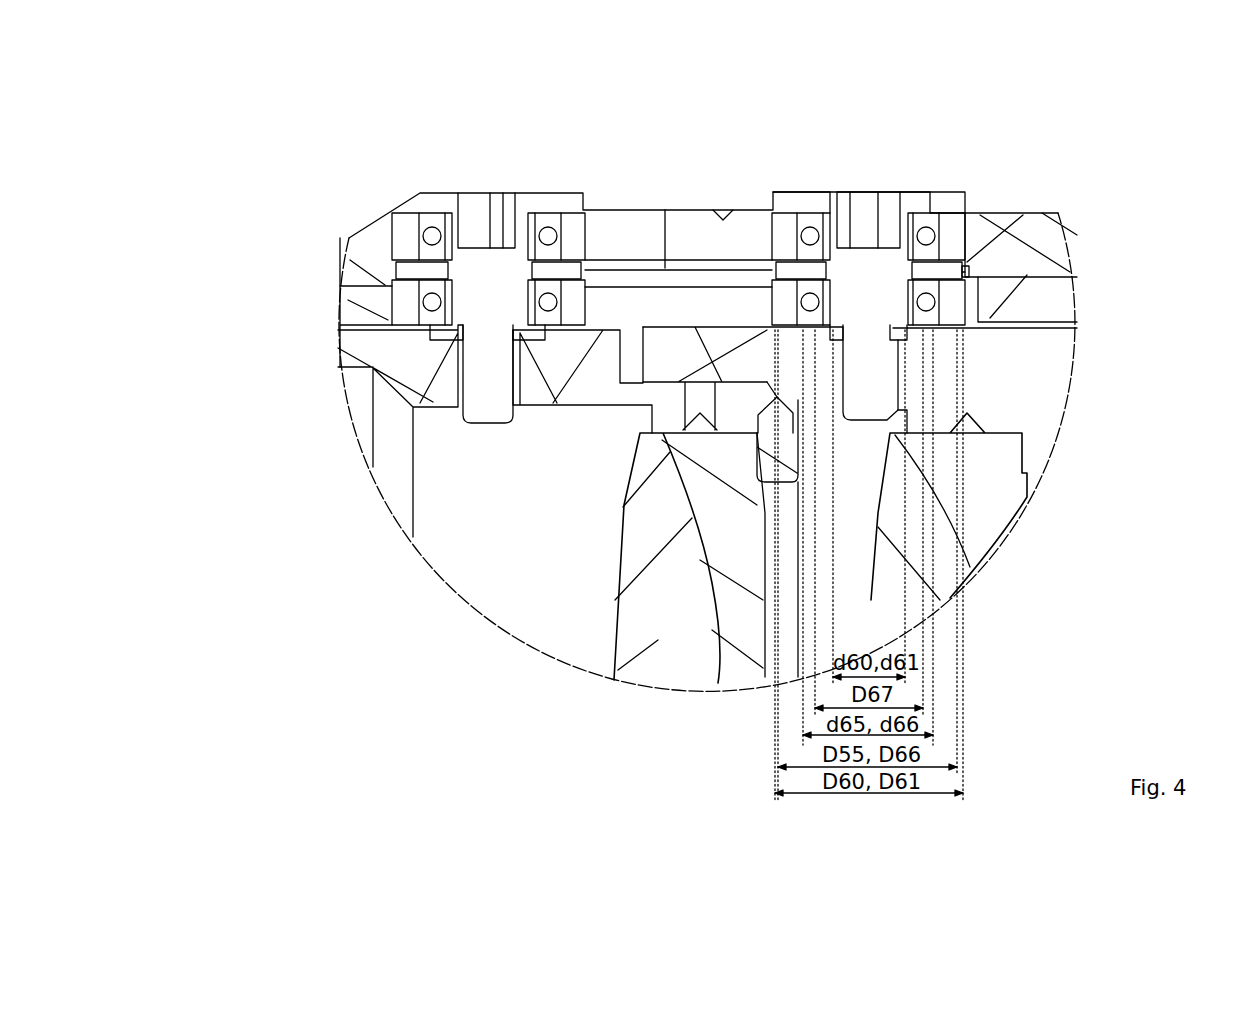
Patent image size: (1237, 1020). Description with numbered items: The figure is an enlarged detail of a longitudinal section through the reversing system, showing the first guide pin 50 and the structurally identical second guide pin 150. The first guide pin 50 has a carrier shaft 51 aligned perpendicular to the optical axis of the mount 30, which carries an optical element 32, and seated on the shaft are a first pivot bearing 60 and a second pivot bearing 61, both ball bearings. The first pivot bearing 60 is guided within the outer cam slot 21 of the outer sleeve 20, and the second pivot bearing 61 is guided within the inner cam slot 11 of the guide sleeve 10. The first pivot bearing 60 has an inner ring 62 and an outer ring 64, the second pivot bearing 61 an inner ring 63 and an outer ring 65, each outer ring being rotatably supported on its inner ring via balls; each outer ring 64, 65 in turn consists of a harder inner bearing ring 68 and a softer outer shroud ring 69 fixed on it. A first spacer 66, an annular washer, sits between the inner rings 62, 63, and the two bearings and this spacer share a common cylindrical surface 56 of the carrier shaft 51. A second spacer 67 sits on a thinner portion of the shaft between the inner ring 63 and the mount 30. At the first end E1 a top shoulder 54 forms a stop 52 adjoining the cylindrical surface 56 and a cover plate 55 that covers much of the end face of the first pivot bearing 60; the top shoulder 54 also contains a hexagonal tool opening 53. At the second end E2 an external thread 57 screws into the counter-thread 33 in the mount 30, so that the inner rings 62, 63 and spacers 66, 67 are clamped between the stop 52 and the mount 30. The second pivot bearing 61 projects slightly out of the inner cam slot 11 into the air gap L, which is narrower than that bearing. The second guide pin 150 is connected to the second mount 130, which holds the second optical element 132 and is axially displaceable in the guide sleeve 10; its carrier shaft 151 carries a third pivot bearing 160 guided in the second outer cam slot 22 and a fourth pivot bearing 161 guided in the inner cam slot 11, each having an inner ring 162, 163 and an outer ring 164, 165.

The guide sleeve 10 is at (1053, 307).
The inner cam slot 11 is at (357, 302).
The outer sleeve 20 is at (1053, 247).
The outer cam slot 21 is at (1003, 250).
The second outer cam slot 22 is at (357, 270).
The mount 30 is at (1045, 420).
The rotor portion 32 is at (982, 540).
The counter-thread 33 is at (898, 388).
The first guide pin 50 is at (910, 236).
The carrier shaft 51 is at (872, 248).
The stop 52 is at (822, 215).
The tool opening 53 is at (887, 240).
The top shoulder 54 is at (928, 215).
The cover plate 55 is at (807, 210).
The cylindrical surface 56 is at (835, 222).
The thread 57 is at (898, 381).
The first pivot bearing 60 is at (945, 225).
The second pivot bearing 61 is at (940, 288).
The inner ring 62 is at (795, 235).
The inner ring 63 is at (790, 252).
The outer ring 64 is at (770, 300).
The outer ring 65 is at (782, 325).
The first spacer 66 is at (968, 262).
The second spacer 67 is at (905, 327).
The inner bearing ring 68 is at (800, 300).
The outer shroud ring 69 is at (778, 322).
The second mount 130 is at (598, 385).
The second optical element 132 is at (633, 613).
The second guide pin 150 is at (450, 248).
The carrier shaft 151 is at (497, 248).
The third pivot bearing 160 is at (547, 240).
The fourth pivot bearing 161 is at (574, 236).
The inner ring 162 is at (447, 222).
The inner ring 163 is at (428, 282).
The outer ring 164 is at (412, 262).
The outer ring 165 is at (405, 285).
The first end E1 is at (937, 258).
The second end E2 is at (878, 410).
The air gap L is at (650, 280).